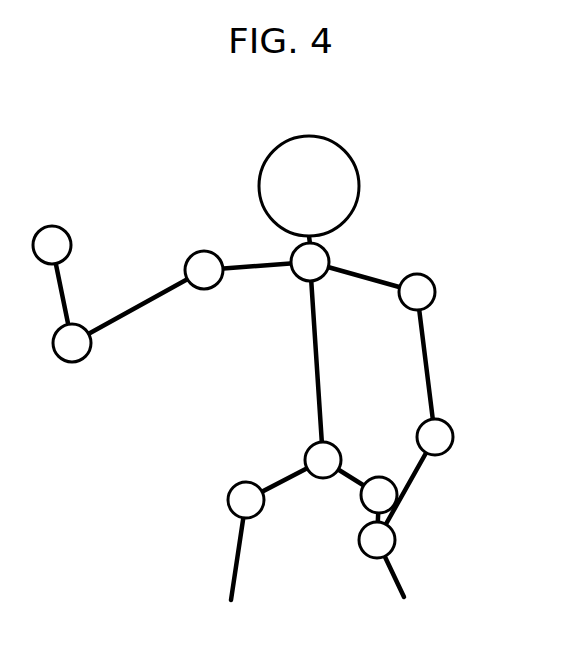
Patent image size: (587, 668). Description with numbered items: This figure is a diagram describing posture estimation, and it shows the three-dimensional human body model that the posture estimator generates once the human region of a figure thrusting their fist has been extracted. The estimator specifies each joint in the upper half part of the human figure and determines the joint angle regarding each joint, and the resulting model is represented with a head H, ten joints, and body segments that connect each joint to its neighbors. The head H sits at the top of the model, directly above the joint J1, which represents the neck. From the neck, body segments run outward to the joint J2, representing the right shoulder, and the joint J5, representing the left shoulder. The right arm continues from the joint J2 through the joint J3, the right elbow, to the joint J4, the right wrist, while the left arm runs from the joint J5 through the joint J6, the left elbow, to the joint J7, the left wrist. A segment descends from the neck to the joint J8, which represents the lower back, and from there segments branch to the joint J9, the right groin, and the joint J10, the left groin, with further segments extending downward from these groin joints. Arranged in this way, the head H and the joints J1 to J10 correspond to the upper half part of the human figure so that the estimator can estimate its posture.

The head H is at (309, 135).
The joint J1 is at (297, 280).
The joint J2 is at (203, 250).
The joint J3 is at (72, 363).
The joint J4 is at (52, 225).
The joint J5 is at (436, 292).
The joint J6 is at (453, 437).
The joint J7 is at (368, 557).
The joint J8 is at (306, 449).
The joint J9 is at (228, 500).
The joint J10 is at (379, 478).